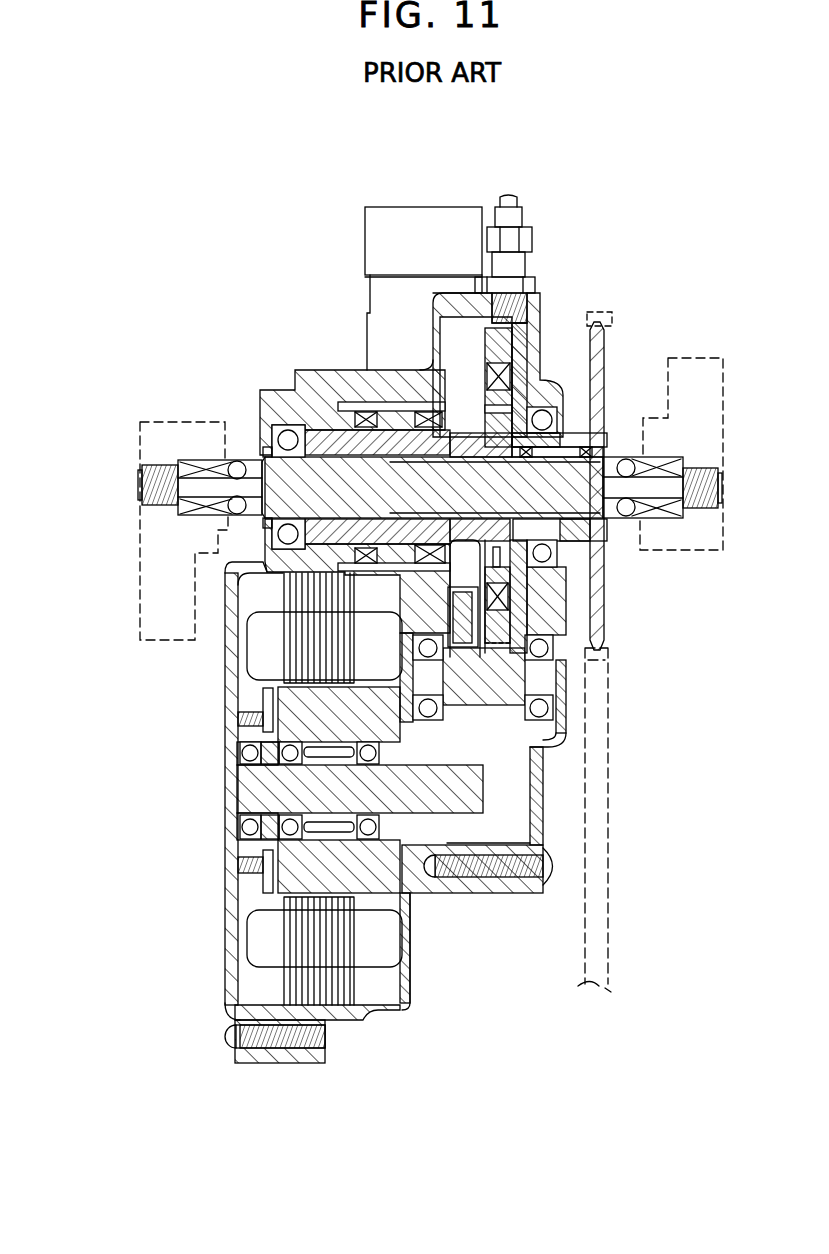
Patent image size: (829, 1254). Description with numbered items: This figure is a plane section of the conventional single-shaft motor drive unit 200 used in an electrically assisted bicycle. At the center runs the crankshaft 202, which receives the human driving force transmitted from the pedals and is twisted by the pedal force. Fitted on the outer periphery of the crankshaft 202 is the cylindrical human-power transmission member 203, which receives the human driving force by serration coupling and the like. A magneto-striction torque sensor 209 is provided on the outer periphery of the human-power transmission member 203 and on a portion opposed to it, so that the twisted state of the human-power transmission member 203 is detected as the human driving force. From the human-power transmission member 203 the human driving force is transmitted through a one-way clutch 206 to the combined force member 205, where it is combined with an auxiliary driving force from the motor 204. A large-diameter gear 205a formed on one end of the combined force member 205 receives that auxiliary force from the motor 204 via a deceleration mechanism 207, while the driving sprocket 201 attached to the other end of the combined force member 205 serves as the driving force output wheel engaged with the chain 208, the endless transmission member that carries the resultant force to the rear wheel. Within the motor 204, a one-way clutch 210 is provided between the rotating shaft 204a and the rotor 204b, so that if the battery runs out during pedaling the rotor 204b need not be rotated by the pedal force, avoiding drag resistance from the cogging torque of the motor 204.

The single-shaft motor drive unit 200 is at (257, 220).
The driving sprocket 201 is at (600, 600).
The crankshaft 202 is at (226, 462).
The human-power transmission member 203 is at (277, 411).
The motor 204 is at (389, 990).
The rotating shaft 204a is at (262, 792).
The rotor 204b is at (247, 867).
The combined force member 205 is at (540, 415).
The large-diameter gear 205a is at (485, 395).
The one-way clutch 206 is at (487, 398).
The deceleration mechanism 207 is at (503, 752).
The chain 208 is at (598, 808).
The magneto-striction torque sensor 209 is at (372, 398).
The one-way clutch 210 is at (322, 828).